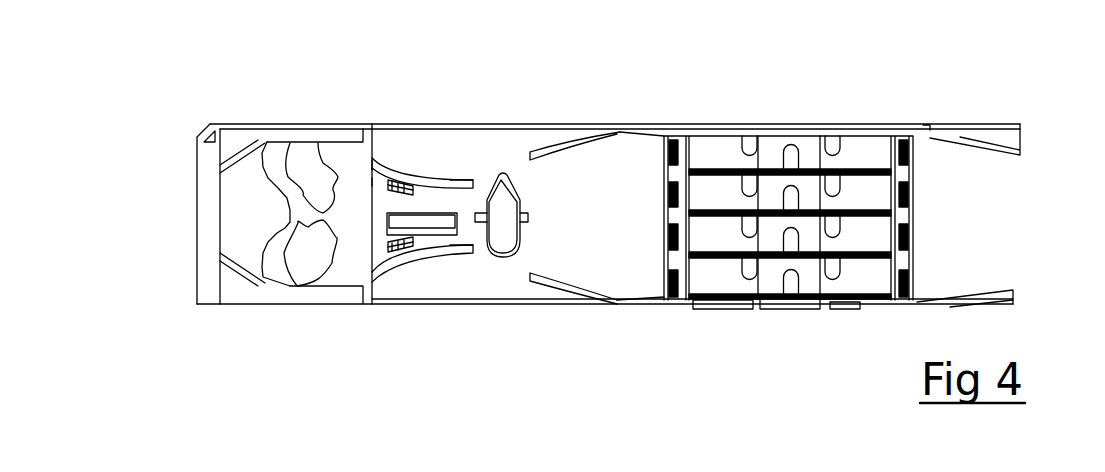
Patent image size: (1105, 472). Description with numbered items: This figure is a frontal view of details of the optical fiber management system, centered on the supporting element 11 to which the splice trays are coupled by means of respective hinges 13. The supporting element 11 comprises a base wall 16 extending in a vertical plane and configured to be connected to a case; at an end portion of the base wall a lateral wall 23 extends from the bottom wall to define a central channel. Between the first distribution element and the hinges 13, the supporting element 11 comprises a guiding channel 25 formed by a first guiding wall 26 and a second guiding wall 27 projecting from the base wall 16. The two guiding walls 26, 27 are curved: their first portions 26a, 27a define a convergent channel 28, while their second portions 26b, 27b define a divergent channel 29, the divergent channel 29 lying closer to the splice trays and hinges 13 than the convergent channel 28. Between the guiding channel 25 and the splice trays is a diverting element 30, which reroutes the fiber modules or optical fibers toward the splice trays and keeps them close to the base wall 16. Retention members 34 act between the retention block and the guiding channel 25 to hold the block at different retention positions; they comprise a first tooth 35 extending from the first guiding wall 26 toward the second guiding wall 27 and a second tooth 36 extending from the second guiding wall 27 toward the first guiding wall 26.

The supporting element 11 is at (622, 293).
The hinge 13 is at (763, 167).
The base wall 16 is at (595, 200).
The lateral wall 23 is at (210, 212).
The guiding channel 25 is at (371, 202).
The first guiding wall 26 is at (430, 183).
The first portion of first guiding wall 26a is at (400, 187).
The second portion of first guiding wall 26b is at (458, 180).
The second guiding wall 27 is at (430, 247).
The first portion of second guiding wall 27a is at (397, 257).
The second portion of second guiding wall 27b is at (460, 250).
The convergent channel 28 is at (385, 226).
The divergent channel 29 is at (460, 207).
The diverting element 30 is at (503, 230).
The retention members 34 is at (371, 176).
The first tooth 35 is at (403, 188).
The second tooth 36 is at (409, 250).